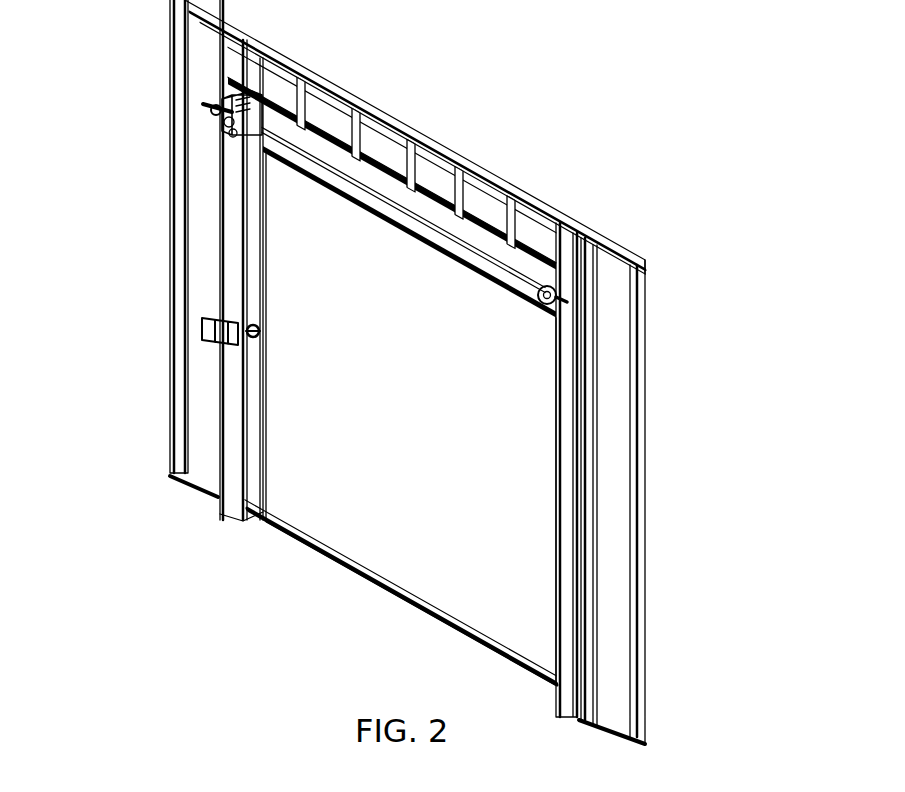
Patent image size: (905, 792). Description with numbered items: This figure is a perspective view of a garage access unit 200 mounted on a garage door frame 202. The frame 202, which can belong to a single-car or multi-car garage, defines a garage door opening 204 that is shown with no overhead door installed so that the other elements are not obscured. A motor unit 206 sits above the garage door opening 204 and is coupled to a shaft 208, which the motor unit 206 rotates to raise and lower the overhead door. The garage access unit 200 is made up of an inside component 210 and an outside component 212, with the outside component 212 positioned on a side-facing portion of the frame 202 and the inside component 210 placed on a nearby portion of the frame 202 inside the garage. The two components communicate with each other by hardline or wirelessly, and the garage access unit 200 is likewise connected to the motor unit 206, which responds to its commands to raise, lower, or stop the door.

The garage access unit 200 is at (495, 372).
The garage door frame 202 is at (641, 531).
The garage door opening 204 is at (453, 337).
The motor unit 206 is at (252, 88).
The shaft 208 is at (365, 190).
The inside component 210 is at (210, 327).
The outside component 212 is at (262, 328).